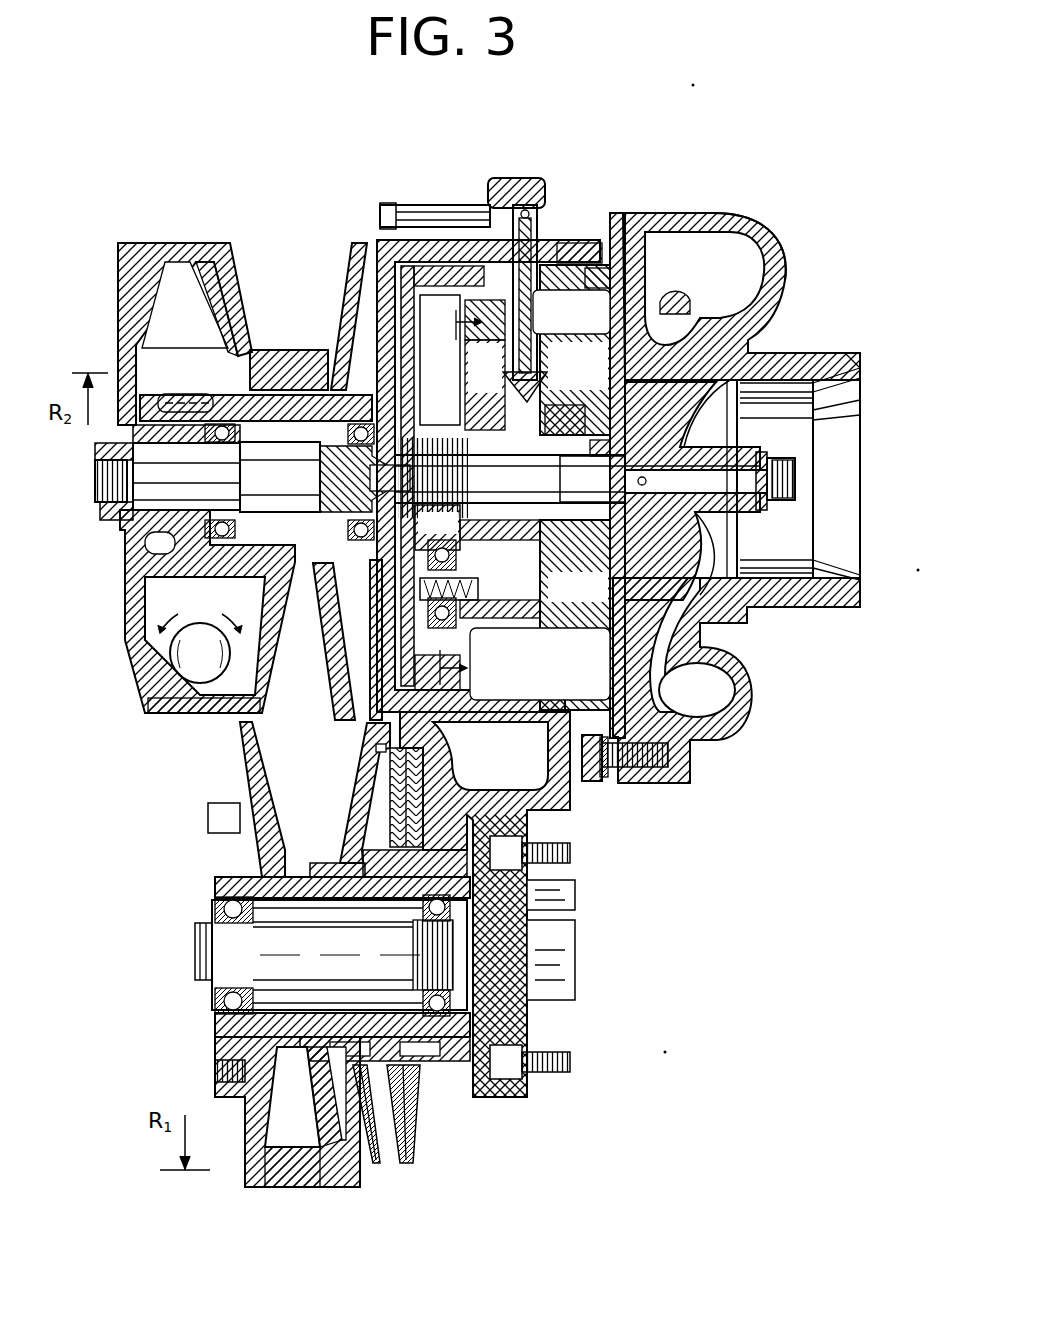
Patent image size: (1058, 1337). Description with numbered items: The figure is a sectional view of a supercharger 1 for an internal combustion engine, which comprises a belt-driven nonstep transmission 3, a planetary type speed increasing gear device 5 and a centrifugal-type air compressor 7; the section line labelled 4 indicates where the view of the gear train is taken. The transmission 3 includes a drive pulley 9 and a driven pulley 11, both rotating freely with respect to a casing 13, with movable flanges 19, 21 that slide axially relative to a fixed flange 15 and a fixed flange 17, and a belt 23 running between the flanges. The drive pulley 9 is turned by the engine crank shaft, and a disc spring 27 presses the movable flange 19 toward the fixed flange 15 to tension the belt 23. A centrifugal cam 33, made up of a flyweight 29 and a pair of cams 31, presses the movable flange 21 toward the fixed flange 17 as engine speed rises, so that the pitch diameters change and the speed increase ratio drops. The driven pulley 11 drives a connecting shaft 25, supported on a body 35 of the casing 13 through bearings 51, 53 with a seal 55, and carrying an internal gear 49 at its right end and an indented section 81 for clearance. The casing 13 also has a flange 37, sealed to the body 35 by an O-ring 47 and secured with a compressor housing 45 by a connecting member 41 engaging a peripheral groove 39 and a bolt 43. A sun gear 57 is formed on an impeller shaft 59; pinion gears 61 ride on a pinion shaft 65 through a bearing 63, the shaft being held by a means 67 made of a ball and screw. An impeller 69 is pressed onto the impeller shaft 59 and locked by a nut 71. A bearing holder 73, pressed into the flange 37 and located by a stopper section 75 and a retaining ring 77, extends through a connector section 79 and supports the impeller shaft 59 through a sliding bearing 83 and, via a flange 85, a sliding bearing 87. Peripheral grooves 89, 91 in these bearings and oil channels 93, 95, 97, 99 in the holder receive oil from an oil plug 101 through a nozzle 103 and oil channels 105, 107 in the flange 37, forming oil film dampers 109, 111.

The supercharger 1 is at (752, 190).
The belt-driven nonstep transmission 3 is at (140, 995).
The section direction 4 is at (456, 488).
The speed increasing gear device 5 is at (462, 715).
The centrifugal-type air compressor 7 is at (785, 238).
The drive pulley 9 is at (182, 886).
The driven pulley 11 is at (135, 728).
The casing 13 is at (378, 238).
The fixed flange 15 is at (260, 772).
The fixed flange 17 is at (350, 280).
The movable flange 19 is at (368, 752).
The movable flange 21 is at (232, 280).
The belt 23 is at (290, 366).
The connecting shaft 25 is at (252, 453).
The disc spring 27 is at (425, 1170).
The flyweight 29 is at (200, 653).
The cams 31 is at (200, 613).
The centrifugal cam 33 is at (178, 716).
The body 35 is at (563, 242).
The flange 37 is at (571, 350).
The peripheral groove 39 is at (606, 242).
The connecting member 41 is at (612, 778).
The bolt 43 is at (592, 780).
The compressor housing 45 is at (775, 283).
The O-ring 47 is at (596, 293).
The internal gear 49 is at (392, 232).
The bearing 51 is at (215, 492).
The bearing 53 is at (345, 570).
The seal 55 is at (348, 560).
The sun gear 57 is at (348, 482).
The impeller shaft 59 is at (796, 478).
The pinion gears 61 is at (480, 690).
The bearing 63 is at (465, 628).
The pinion shaft 65 is at (580, 602).
The means for preventing the pinion shaft from falling off 67 is at (480, 588).
The impeller 69 is at (685, 412).
The nut 71 is at (762, 510).
The bearing holder 73 is at (628, 432).
The stopper section 75 is at (598, 550).
The retaining ring 77 is at (460, 555).
The connector section 79 is at (428, 425).
The indented section 81 is at (365, 479).
The sliding bearing 83 is at (255, 481).
The flange 85 is at (581, 478).
The sliding bearing 87 is at (603, 479).
The peripheral groove 89 is at (437, 527).
The peripheral groove 91 is at (630, 508).
The oil channel 93 is at (442, 476).
The oil channel 95 is at (482, 428).
The oil channel 97 is at (485, 385).
The oil channel 99 is at (600, 438).
The oil plug 101 is at (488, 192).
The nozzle 103 is at (530, 300).
The oil channel 105 is at (548, 372).
The oil channel 107 is at (540, 370).
The oil film damper 109 is at (318, 495).
The oil film damper 111 is at (515, 543).